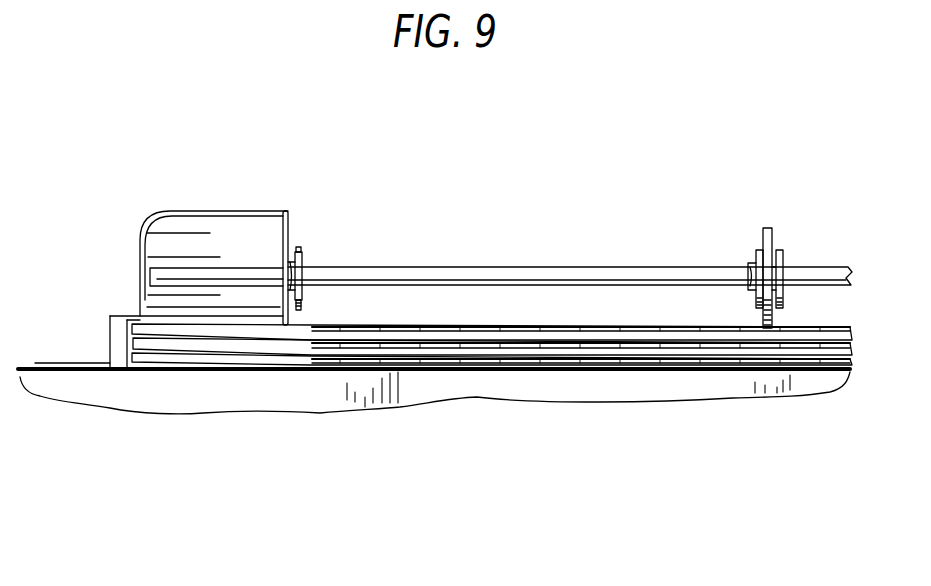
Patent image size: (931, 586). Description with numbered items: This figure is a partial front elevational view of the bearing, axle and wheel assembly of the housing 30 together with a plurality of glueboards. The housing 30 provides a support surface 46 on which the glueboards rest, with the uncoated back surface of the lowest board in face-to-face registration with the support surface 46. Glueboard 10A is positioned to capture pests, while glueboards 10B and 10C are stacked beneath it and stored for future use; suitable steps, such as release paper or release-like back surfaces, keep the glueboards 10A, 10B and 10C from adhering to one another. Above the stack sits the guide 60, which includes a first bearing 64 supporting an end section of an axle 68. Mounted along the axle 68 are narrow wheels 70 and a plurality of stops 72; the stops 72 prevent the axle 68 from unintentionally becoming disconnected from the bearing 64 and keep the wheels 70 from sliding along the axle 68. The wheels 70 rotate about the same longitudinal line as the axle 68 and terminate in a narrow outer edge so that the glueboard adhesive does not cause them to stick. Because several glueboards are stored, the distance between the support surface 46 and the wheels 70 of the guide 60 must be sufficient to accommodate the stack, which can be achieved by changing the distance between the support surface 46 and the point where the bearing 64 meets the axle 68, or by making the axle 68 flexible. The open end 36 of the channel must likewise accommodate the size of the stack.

The housing 30 is at (627, 397).
The support surface 46 is at (132, 370).
The open end 36 is at (132, 323).
The glueboard 10A is at (148, 335).
The glueboard 10B is at (183, 352).
The glueboard 10C is at (302, 372).
The guide 60 is at (563, 258).
The first bearing 64 is at (287, 210).
The axle 68 is at (442, 267).
The stops 72 is at (304, 257).
The wheels 70 is at (768, 230).